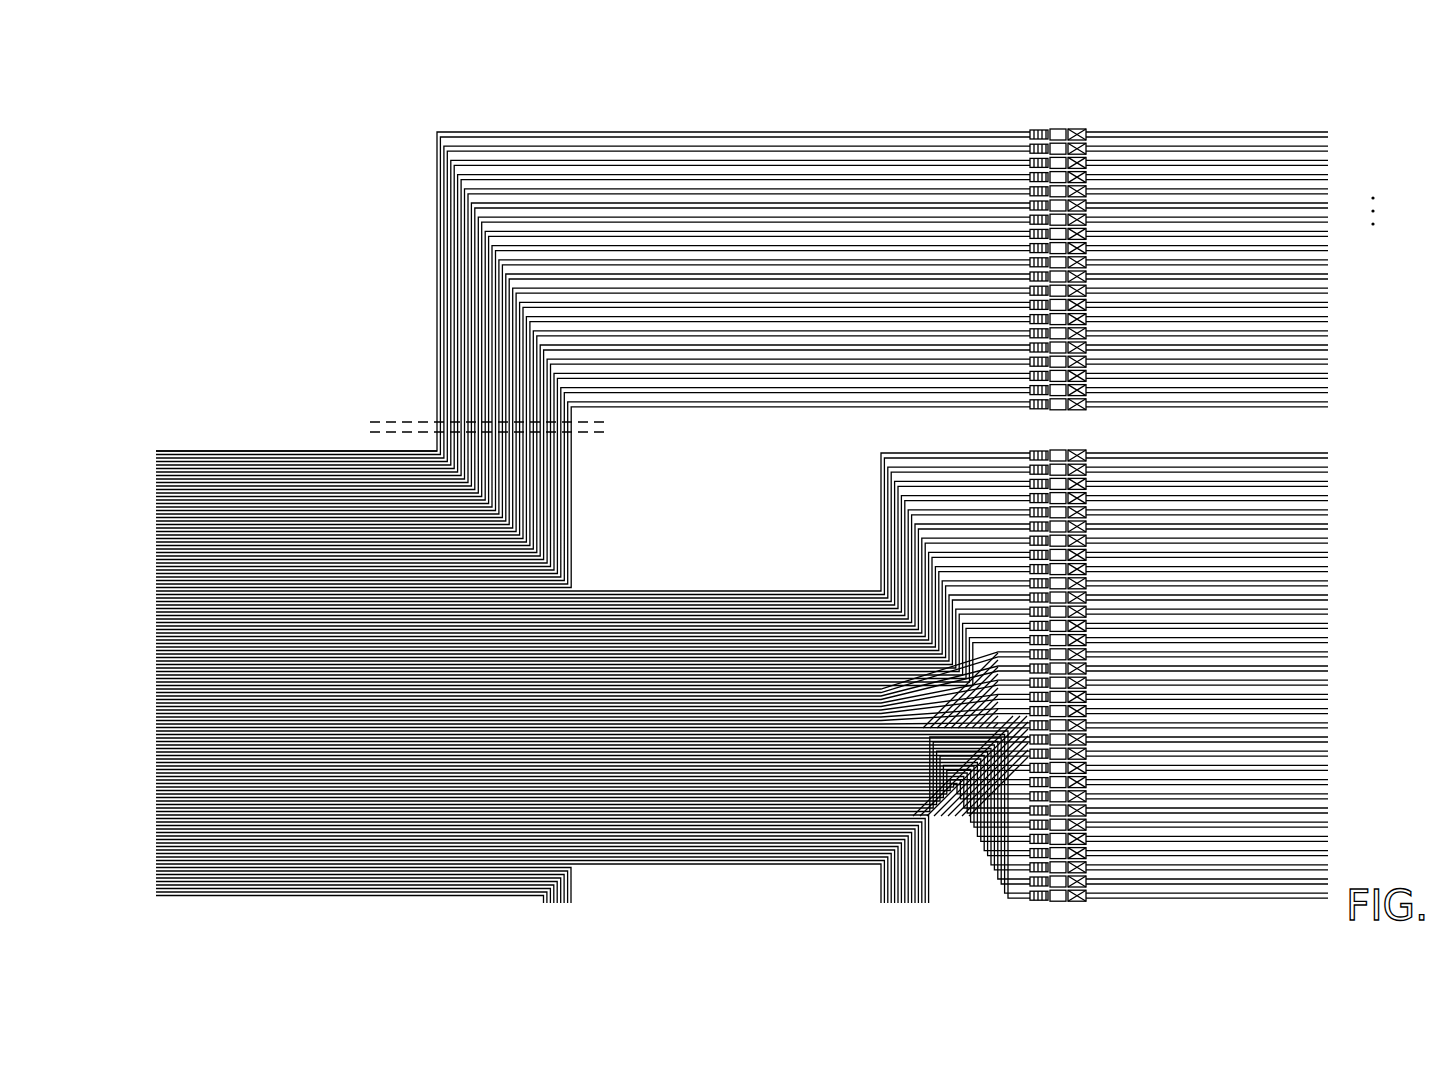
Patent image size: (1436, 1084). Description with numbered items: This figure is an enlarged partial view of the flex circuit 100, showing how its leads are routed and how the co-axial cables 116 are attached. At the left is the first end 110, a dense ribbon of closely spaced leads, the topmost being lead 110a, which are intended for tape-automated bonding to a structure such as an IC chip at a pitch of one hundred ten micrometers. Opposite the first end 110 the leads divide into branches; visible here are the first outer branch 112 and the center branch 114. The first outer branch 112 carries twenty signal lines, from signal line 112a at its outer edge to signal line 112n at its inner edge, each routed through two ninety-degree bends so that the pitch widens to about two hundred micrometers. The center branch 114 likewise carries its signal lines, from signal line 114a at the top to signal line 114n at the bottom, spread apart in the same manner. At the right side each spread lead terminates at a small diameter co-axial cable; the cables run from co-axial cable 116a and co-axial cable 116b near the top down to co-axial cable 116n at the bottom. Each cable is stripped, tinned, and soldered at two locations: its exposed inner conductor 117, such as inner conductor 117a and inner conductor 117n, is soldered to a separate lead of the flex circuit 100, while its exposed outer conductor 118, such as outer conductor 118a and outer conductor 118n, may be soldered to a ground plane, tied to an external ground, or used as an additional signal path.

The flex circuit 100 is at (270, 139).
The first end 110 is at (189, 410).
The lead 110a is at (148, 392).
The first outer branch 112 is at (512, 117).
The signal line 112a is at (805, 123).
The signal line 112n is at (740, 398).
The center branch 114 is at (680, 540).
The signal line 114a is at (935, 443).
The signal line 114n is at (966, 893).
The co-axial cables 116 is at (1235, 112).
The co-axial cable 116a is at (1320, 126).
The co-axial cable 116b is at (1320, 141).
The co-axial cable 116n is at (1320, 880).
The exposed inner conductor 117 is at (1031, 119).
The exposed inner conductor 117a is at (1021, 122).
The exposed inner conductor 117n is at (1026, 893).
The exposed outer conductor 118 is at (1068, 120).
The exposed outer conductor 118a is at (1080, 124).
The exposed outer conductor 118n is at (1070, 893).